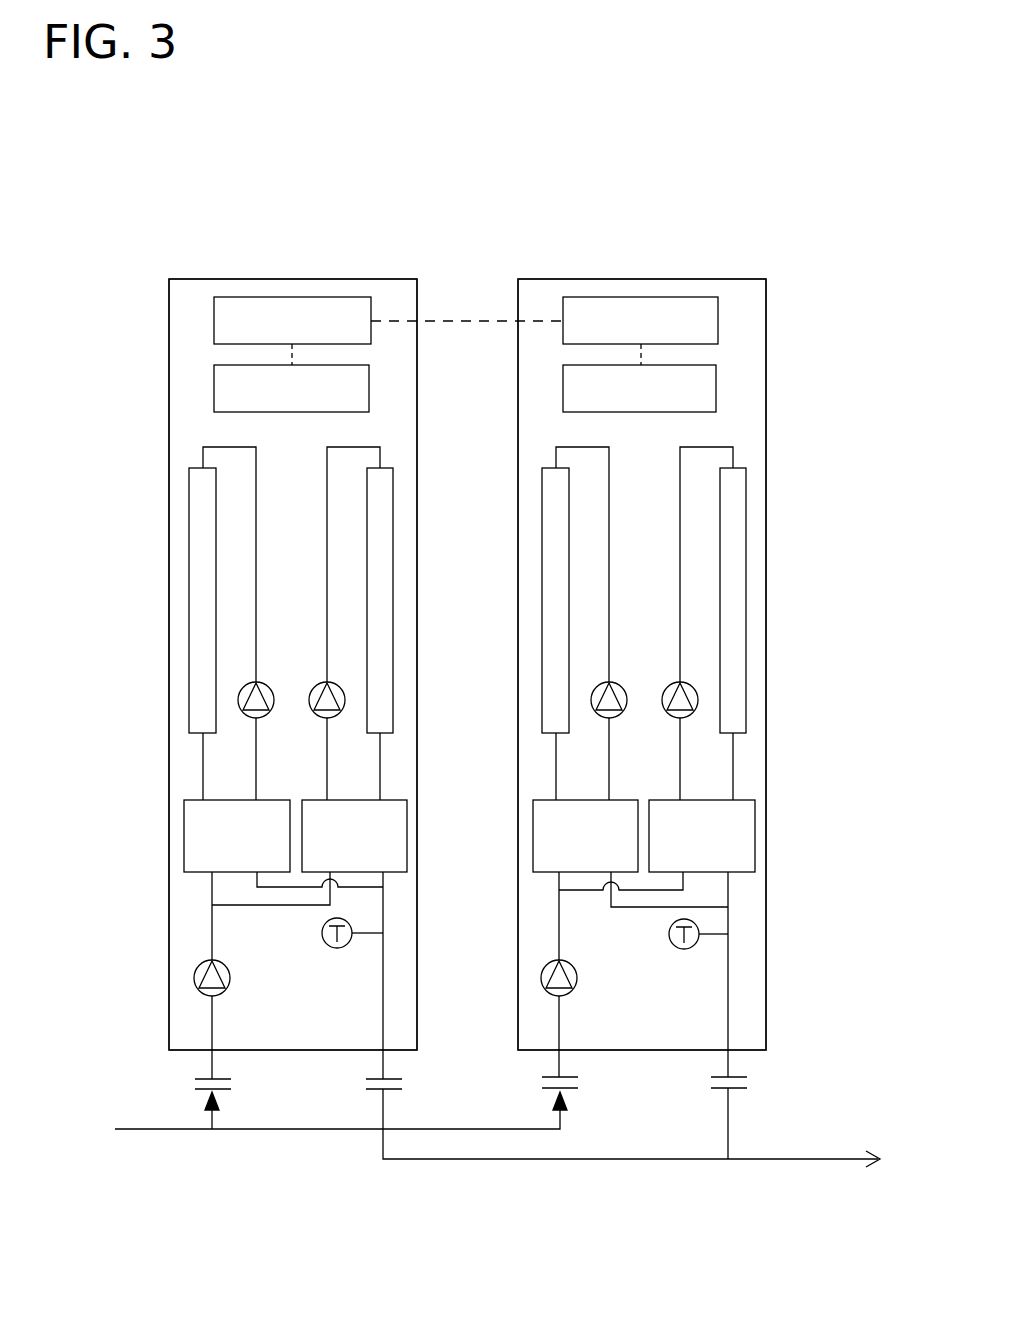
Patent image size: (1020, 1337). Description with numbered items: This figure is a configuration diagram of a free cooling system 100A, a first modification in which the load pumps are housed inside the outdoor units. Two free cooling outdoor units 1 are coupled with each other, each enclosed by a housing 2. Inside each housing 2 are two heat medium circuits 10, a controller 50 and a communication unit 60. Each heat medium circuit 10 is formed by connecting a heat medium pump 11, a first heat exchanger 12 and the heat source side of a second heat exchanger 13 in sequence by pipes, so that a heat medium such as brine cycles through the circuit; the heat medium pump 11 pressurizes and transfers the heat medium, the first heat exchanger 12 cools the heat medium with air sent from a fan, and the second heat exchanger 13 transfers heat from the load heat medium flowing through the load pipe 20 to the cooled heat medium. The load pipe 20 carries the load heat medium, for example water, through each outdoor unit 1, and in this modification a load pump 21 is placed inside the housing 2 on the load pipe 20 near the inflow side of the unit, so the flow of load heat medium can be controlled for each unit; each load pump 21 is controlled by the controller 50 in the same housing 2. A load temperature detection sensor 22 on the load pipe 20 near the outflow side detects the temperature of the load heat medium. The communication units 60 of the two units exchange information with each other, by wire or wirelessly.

The free cooling system 100A is at (483, 222).
The free cooling outdoor unit 1 is at (284, 279).
The housing 2 is at (169, 690).
The communication unit 60 is at (214, 321).
The controller 50 is at (214, 389).
The heat medium circuit 10 is at (203, 766).
The first heat exchanger 12 is at (189, 530).
The heat medium pump 11 is at (259, 683).
The second heat exchanger 13 is at (184, 835).
The load pump 21 is at (194, 978).
The load temperature detection sensor 22 is at (337, 948).
The load pipe 20 is at (290, 1130).